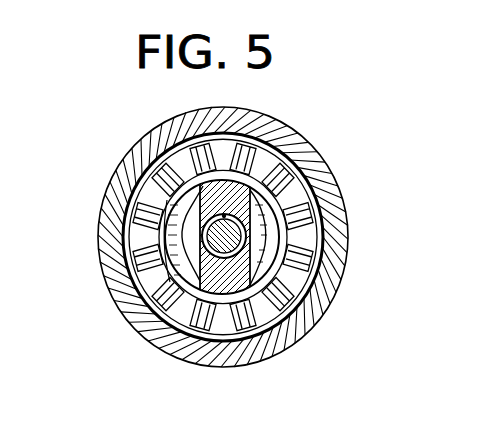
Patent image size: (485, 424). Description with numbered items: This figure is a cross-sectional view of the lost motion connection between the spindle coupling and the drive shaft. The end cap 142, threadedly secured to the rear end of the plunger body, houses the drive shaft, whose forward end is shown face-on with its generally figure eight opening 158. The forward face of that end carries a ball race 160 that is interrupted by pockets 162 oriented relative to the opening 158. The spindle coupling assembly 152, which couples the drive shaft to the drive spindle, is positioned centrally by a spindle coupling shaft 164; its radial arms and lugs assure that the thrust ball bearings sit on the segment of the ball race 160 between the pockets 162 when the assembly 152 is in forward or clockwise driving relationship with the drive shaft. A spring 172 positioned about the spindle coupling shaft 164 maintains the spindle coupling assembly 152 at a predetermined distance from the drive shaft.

The end cap 142 is at (117, 305).
The spindle coupling assembly 152 is at (203, 196).
The figure eight opening 158 is at (262, 272).
The ball race 160 is at (302, 228).
The pockets 162 is at (233, 138).
The spindle coupling shaft 164 is at (163, 347).
The spring 172 is at (232, 300).